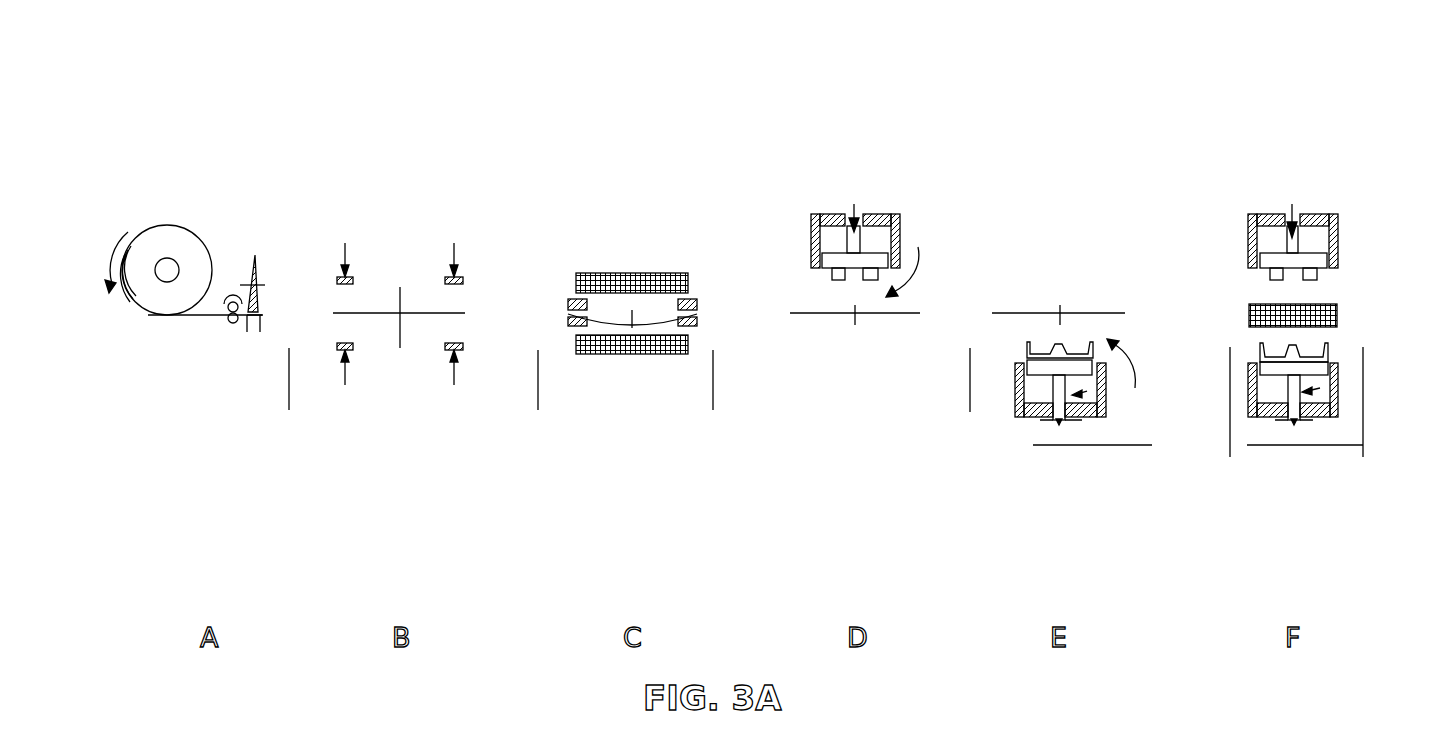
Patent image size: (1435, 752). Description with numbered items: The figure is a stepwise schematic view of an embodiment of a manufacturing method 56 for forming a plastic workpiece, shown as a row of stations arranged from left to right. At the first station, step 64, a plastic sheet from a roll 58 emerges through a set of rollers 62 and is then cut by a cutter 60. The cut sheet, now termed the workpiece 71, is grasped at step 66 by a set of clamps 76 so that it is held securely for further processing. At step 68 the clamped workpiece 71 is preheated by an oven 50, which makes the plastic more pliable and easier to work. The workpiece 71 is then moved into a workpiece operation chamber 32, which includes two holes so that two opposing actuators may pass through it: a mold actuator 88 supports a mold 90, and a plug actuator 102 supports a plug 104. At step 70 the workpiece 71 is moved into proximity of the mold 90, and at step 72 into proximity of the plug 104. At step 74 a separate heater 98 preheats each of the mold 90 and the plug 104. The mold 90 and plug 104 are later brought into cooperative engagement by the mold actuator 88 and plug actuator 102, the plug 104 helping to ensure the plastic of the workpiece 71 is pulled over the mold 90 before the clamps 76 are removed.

The workpiece operation chamber 32 is at (822, 212).
The oven 50 is at (632, 272).
The assembly process 56 is at (846, 108).
The roll 58 is at (165, 224).
The cutter 60 is at (250, 262).
The set of rollers 62 is at (228, 320).
The step 64 is at (210, 526).
The step 66 is at (403, 526).
The step 68 is at (637, 526).
The step 70 is at (867, 526).
The workpiece 71 is at (374, 324).
The step 72 is at (1067, 526).
The step 74 is at (1298, 526).
The clamps 76 is at (452, 250).
The mold actuator 88 is at (856, 212).
The mold 90 is at (872, 282).
The heater 98 is at (1340, 315).
The plug actuator 102 is at (1103, 413).
The plug 104 is at (1027, 345).